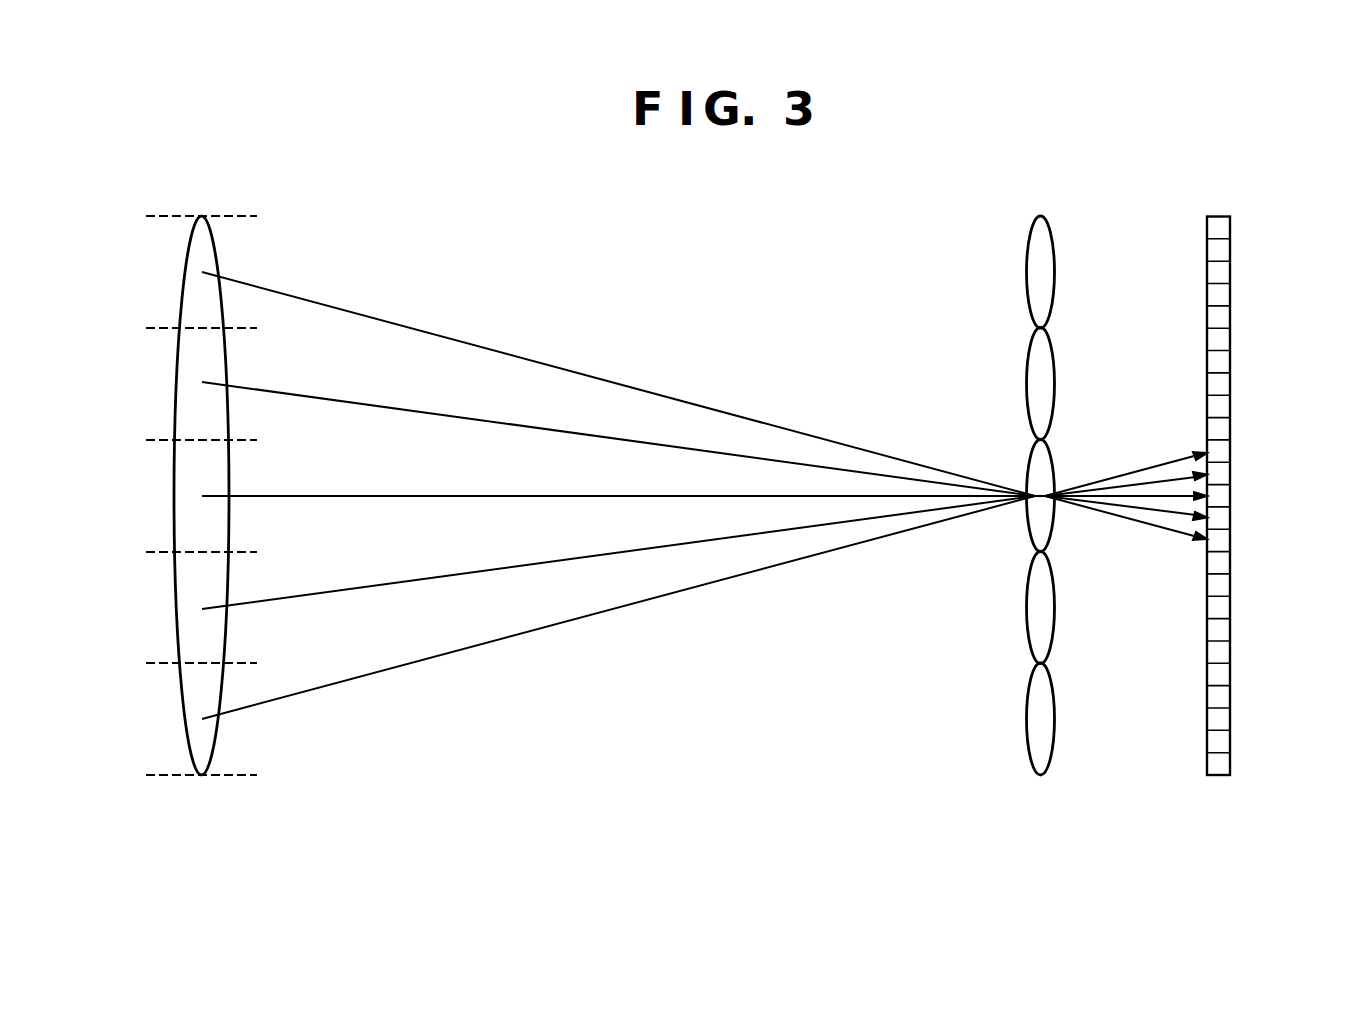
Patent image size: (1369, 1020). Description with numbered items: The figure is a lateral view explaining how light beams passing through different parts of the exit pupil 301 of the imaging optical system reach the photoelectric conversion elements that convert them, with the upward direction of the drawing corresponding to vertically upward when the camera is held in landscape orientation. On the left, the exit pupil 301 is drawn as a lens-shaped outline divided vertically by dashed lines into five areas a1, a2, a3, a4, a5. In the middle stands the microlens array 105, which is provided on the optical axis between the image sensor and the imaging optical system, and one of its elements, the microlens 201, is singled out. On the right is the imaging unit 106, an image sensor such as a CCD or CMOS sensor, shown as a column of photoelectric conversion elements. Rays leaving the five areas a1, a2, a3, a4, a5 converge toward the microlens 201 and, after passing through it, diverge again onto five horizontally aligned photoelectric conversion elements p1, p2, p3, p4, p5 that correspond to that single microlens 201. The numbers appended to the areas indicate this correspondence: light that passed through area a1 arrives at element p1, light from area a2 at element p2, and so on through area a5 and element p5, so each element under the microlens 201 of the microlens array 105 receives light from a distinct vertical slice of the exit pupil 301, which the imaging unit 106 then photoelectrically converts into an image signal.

The exit pupil 301 is at (192, 236).
The microlens array 105 is at (1040, 216).
The microlens 201 is at (1037, 470).
The imaging unit 106 is at (1218, 216).
The area a1 is at (578, 377).
The area a2 is at (578, 433).
The area a3 is at (583, 496).
The area a4 is at (578, 560).
The area a5 is at (579, 616).
The photoelectric conversion element p1 is at (1233, 539).
The photoelectric conversion element p2 is at (1233, 518).
The photoelectric conversion element p3 is at (1233, 497).
The photoelectric conversion element p4 is at (1233, 474).
The photoelectric conversion element p5 is at (1233, 453).